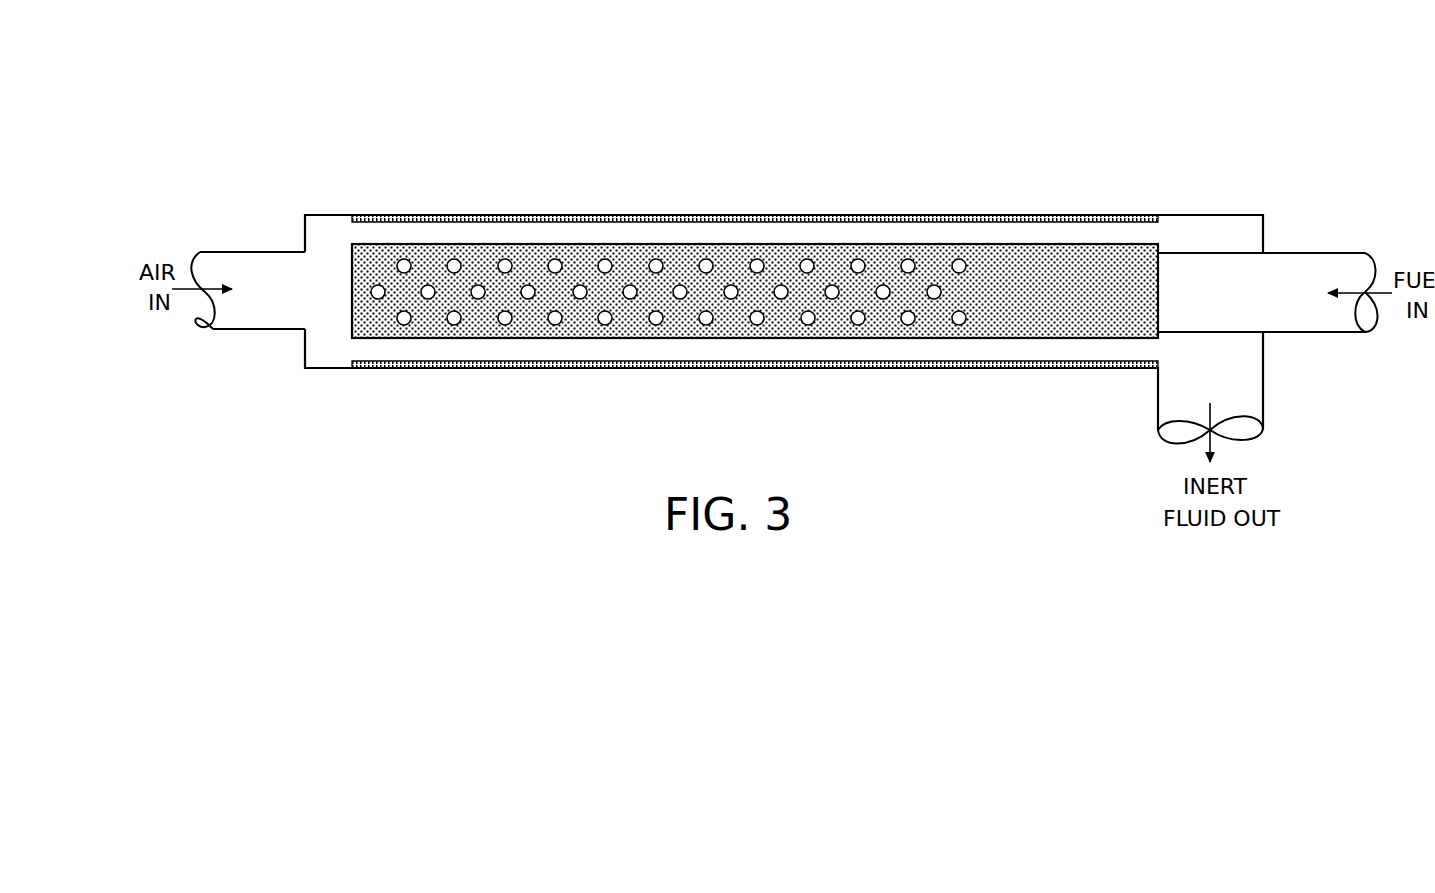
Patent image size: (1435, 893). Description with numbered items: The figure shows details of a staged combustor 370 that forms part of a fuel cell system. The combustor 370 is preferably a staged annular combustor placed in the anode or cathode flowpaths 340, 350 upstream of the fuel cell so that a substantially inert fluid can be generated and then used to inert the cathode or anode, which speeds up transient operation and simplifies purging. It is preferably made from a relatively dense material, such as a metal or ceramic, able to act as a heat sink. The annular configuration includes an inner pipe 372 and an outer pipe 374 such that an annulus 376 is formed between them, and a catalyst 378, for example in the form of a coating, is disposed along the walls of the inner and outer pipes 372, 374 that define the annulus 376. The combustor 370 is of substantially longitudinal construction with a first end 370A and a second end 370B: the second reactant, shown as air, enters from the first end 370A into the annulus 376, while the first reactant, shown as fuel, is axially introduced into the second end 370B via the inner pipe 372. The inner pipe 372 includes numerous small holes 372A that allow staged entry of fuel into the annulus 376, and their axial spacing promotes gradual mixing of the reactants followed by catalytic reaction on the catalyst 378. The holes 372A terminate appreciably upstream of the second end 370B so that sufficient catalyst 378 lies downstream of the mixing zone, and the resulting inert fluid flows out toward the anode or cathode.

The cathode flowpath 340 is at (1310, 250).
The anode flowpath 350 is at (263, 331).
The combustor 370 is at (784, 250).
The first end 370A is at (252, 224).
The second end 370B is at (1236, 188).
The inner pipe 372 is at (1210, 258).
The holes 372A is at (808, 311).
The outer pipe 374 is at (962, 218).
The annulus 376 is at (1048, 232).
The catalyst 378 is at (430, 246).